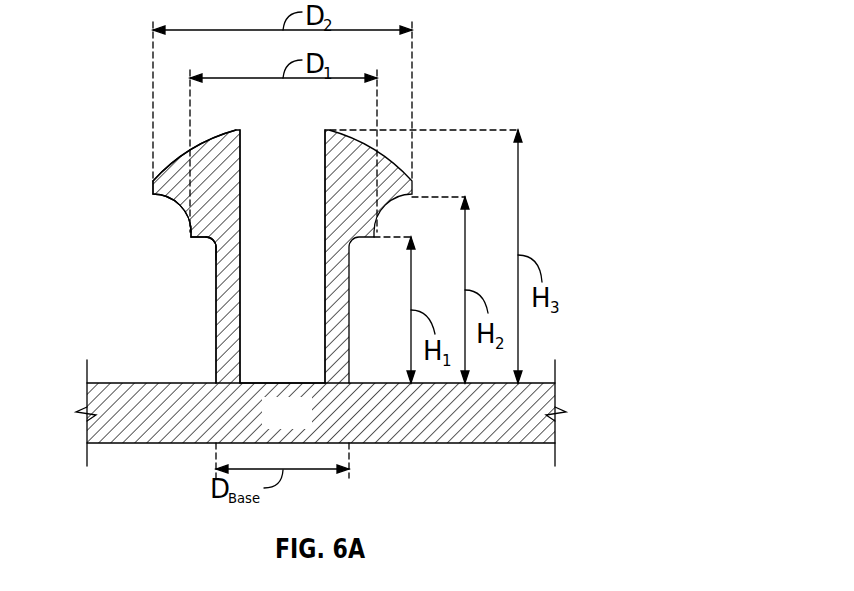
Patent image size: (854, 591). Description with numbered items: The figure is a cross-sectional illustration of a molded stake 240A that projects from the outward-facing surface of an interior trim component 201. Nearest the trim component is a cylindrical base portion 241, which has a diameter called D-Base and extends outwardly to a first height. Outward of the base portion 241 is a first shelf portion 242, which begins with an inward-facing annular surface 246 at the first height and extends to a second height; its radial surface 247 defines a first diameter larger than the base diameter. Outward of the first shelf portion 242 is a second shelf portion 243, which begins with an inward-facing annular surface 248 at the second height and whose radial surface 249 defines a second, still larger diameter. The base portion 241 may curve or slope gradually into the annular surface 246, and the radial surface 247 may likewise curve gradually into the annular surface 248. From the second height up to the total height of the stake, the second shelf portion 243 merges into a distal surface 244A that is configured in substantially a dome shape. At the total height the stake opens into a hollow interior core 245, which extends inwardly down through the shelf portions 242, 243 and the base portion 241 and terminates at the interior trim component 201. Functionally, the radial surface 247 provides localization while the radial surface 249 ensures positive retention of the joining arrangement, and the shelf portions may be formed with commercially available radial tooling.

The interior trim component 201 is at (306, 425).
The molded stake 240A is at (124, 72).
The base portion 241 is at (215, 348).
The first shelf portion 242 is at (209, 252).
The second shelf portion 243 is at (189, 235).
The distal surface 244A is at (207, 132).
The hollow interior core 245 is at (304, 146).
The inward-facing annular surface 246 is at (207, 241).
The radial surface 247 is at (189, 231).
The inward-facing annular surface 248 is at (172, 208).
The radial surface 249 is at (152, 191).